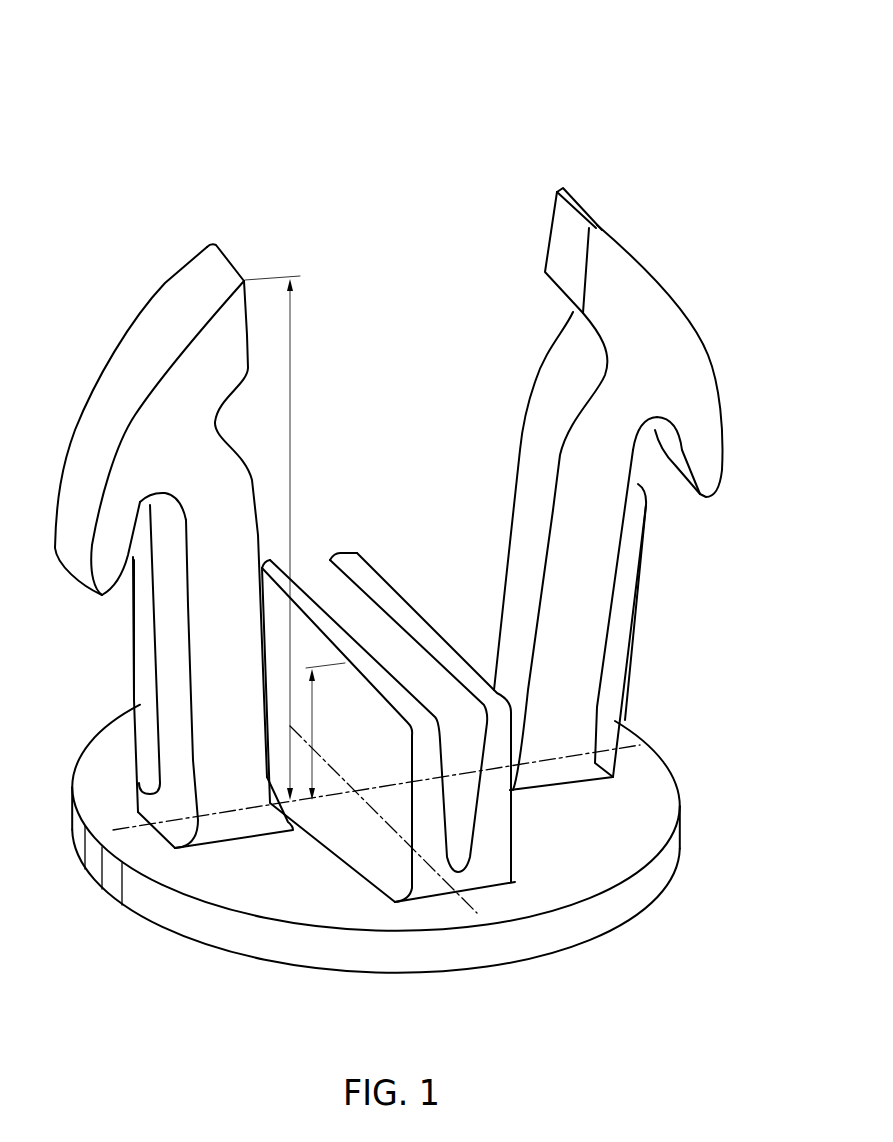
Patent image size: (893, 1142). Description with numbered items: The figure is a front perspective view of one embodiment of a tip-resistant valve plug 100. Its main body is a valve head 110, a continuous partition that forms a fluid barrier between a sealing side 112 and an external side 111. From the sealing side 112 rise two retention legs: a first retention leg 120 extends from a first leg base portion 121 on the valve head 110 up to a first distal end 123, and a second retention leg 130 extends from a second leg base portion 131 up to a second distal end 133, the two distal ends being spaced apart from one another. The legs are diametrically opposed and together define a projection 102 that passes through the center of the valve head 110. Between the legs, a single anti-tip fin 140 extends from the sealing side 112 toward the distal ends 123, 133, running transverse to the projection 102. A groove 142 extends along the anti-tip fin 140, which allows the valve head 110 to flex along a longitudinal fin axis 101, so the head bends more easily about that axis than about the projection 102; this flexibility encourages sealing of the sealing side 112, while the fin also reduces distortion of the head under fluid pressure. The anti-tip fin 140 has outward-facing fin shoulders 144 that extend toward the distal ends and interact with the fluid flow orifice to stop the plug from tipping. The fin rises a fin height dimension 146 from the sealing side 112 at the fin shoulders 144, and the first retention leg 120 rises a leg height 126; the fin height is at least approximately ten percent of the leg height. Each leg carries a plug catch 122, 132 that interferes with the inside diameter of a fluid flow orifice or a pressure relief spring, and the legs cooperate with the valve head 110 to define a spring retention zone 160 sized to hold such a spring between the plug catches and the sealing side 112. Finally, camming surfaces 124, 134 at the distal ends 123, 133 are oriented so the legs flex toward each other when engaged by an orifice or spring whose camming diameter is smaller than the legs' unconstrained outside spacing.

The tip-resistant valve plug 100 is at (514, 88).
The longitudinal fin axis 101 is at (465, 905).
The projection 102 is at (632, 745).
The valve head 110 is at (508, 986).
The external side 111 is at (230, 953).
The sealing side 112 is at (183, 877).
The first retention leg 120 is at (112, 378).
The first leg base portion 121 is at (238, 838).
The plug catch 122 is at (165, 496).
The first distal end 123 is at (218, 266).
The camming surface 124 is at (157, 311).
The leg height 126 is at (290, 457).
The second retention leg 130 is at (673, 279).
The second leg base portion 131 is at (580, 783).
The plug catch 132 is at (671, 428).
The second distal end 133 is at (577, 204).
The camming surface 134 is at (700, 335).
The anti-tip fin 140 is at (401, 561).
The groove 142 is at (462, 835).
The fin shoulders 144 is at (326, 566).
The fin height dimension 146 is at (314, 735).
The spring retention zone 160 is at (143, 553).